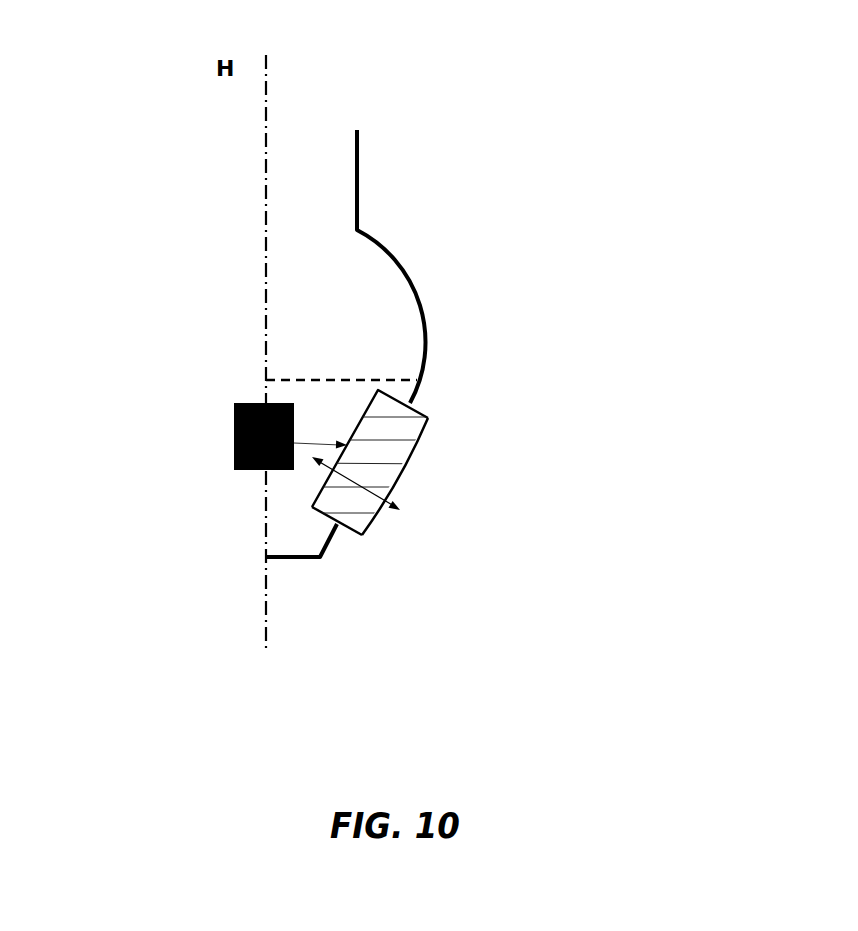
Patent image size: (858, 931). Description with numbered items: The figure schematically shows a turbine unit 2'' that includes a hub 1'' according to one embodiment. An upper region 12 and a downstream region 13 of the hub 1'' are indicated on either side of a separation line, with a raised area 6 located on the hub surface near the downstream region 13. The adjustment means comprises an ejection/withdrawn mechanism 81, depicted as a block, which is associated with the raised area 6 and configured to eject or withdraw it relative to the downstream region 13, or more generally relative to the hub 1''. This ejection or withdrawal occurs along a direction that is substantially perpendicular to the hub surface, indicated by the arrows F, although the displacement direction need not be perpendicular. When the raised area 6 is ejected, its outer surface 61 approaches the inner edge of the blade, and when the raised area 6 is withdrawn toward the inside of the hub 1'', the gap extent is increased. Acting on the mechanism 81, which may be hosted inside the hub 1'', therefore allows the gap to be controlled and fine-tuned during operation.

The hub 1'' is at (454, 207).
The turbine unit 2'' is at (711, 195).
The upper rim region 12 is at (323, 294).
The downstream region 13 is at (237, 529).
The raised area 6 is at (387, 458).
The outer surface 61 is at (425, 455).
The ejection/withdrawn mechanism 81 is at (222, 441).